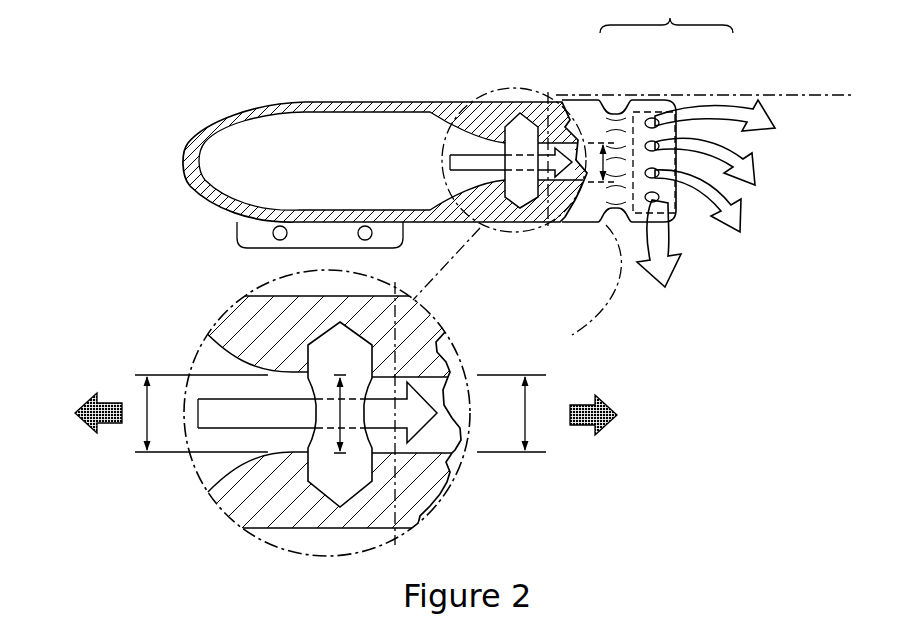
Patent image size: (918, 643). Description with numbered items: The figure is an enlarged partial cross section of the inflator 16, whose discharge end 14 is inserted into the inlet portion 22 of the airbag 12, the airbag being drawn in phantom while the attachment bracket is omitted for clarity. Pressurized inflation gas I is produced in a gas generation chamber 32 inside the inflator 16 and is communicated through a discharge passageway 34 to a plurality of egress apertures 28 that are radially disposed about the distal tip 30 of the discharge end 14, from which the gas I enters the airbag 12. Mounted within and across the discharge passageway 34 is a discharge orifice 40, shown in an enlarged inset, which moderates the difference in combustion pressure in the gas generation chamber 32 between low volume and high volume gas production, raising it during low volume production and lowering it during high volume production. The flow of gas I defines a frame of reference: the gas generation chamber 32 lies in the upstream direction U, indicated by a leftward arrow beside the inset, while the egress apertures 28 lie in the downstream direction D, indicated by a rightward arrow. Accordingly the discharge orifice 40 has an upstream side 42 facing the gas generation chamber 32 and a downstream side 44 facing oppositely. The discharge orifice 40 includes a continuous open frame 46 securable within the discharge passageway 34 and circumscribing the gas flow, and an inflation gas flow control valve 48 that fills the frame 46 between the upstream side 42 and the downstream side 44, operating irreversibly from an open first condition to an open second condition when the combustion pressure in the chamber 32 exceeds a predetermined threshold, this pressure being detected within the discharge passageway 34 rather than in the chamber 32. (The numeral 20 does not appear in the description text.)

The airbag 12 is at (705, 47).
The discharge end 14 is at (535, 101).
The inflator 16 is at (262, 97).
The nozzle cap 20 is at (757, 93).
The inlet portion 22 is at (587, 92).
The egress apertures 28 is at (653, 200).
The distal tip 30 is at (682, 210).
The gas generation chamber 32 is at (346, 169).
The discharge passageway 34 is at (470, 140).
The discharge orifice 40 is at (504, 120).
The upstream side 42 is at (300, 442).
The downstream side 44 is at (375, 440).
The continuous open frame 46 is at (337, 362).
The inflation gas flow control valve 48 is at (315, 413).
The pressurized inflation gas I is at (447, 160).
The upstream direction U is at (98, 407).
The downstream direction D is at (596, 410).